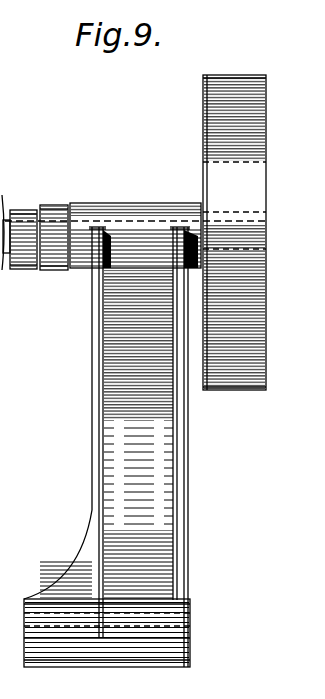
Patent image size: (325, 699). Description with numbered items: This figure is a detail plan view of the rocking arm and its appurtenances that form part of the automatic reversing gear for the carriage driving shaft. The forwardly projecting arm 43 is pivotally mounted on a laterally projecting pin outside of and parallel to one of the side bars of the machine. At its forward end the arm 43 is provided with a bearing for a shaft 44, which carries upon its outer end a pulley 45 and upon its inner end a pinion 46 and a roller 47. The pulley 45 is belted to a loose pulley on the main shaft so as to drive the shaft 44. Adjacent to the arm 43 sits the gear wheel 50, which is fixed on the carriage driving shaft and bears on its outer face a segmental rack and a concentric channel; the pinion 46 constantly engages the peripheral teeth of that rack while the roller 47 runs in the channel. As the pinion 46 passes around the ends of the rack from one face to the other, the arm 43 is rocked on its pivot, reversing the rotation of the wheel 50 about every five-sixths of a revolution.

The arm 43 is at (177, 497).
The shaft 44 is at (149, 250).
The pulley 45 is at (241, 370).
The pinion 46 is at (62, 257).
The roller 47 is at (27, 267).
The gear wheel 50 is at (6, 143).